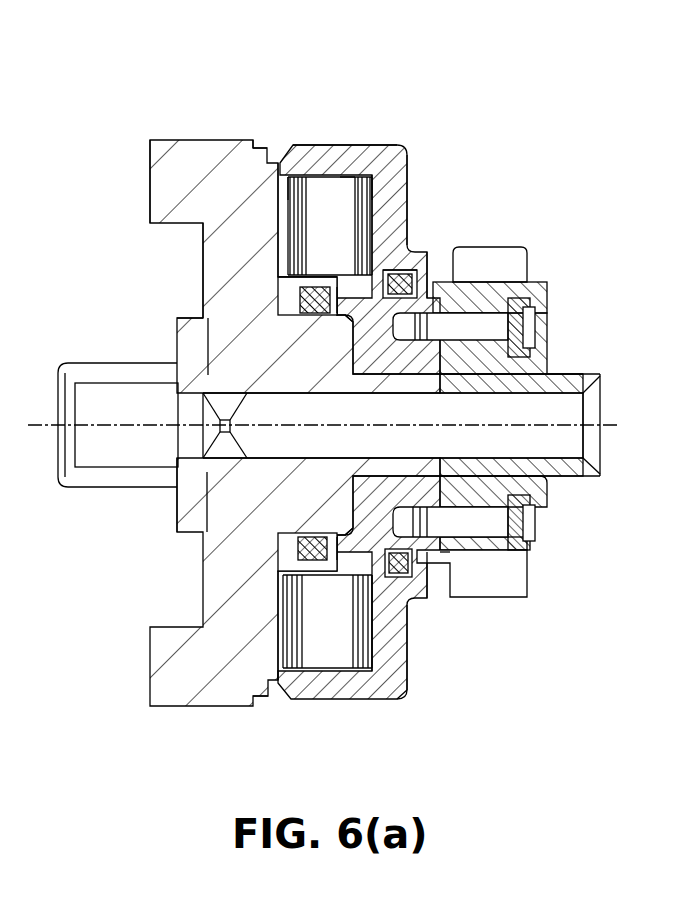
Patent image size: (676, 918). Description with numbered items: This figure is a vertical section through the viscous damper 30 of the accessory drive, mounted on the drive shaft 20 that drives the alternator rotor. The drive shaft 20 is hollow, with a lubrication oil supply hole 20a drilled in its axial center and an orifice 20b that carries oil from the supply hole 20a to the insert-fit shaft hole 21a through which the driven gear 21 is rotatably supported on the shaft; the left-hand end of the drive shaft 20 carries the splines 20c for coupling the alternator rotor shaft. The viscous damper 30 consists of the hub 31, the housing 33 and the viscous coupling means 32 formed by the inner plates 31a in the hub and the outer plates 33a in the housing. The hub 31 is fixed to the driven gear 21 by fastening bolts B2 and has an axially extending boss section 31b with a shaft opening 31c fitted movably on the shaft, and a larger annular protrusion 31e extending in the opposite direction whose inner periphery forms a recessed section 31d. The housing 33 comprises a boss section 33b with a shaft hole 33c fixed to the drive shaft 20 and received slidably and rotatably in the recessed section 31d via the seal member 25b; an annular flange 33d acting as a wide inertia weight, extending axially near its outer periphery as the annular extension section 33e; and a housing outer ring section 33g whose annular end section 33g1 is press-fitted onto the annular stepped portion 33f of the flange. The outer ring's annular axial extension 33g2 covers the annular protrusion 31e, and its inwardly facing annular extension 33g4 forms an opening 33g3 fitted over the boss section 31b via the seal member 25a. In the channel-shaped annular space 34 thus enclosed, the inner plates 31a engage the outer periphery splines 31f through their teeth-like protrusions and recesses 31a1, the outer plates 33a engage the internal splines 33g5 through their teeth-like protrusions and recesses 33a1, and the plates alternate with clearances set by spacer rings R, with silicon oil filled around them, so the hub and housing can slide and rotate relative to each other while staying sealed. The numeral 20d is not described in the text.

The drive shaft 20 is at (580, 480).
The lubrication oil supply hole 20a is at (590, 372).
The orifice 20b is at (562, 405).
The splines 20c is at (128, 452).
The washer 20d is at (162, 527).
The driven gear 21 is at (520, 264).
The insert-fit shaft hole 21a is at (540, 370).
The seal member 25a is at (425, 262).
The seal member 25b is at (410, 210).
The viscous damper 30 is at (230, 124).
The hub 31 is at (430, 600).
The inner plates 31a is at (388, 680).
The teeth-like protrusions and recesses 31a1 is at (407, 680).
The boss section 31b is at (480, 598).
The shaft opening 31c is at (505, 585).
The recessed section 31d is at (410, 633).
The annular protrusion 31e is at (410, 206).
The outer periphery splines 31f is at (315, 276).
The viscous coupling means 32 is at (398, 160).
The housing 33 is at (172, 120).
The outer plates 33a is at (312, 690).
The teeth-like protrusions and recesses 33a1 is at (342, 665).
The boss section 33b is at (292, 352).
The shaft hole 33c is at (252, 375).
The annular flange 33d is at (277, 350).
The annular extension section 33e is at (168, 177).
The annular stepped portion 33f is at (276, 143).
The housing outer ring section 33g is at (341, 140).
The annular end section 33g1 is at (288, 150).
The annular axial extension 33g2 is at (352, 158).
The opening 33g3 is at (440, 262).
The inwardly facing annular extension 33g4 is at (410, 172).
The internal splines 33g5 is at (347, 210).
The annular space 34 is at (376, 175).
The fastening bolts B2 is at (533, 540).
The spacer rings R is at (360, 690).